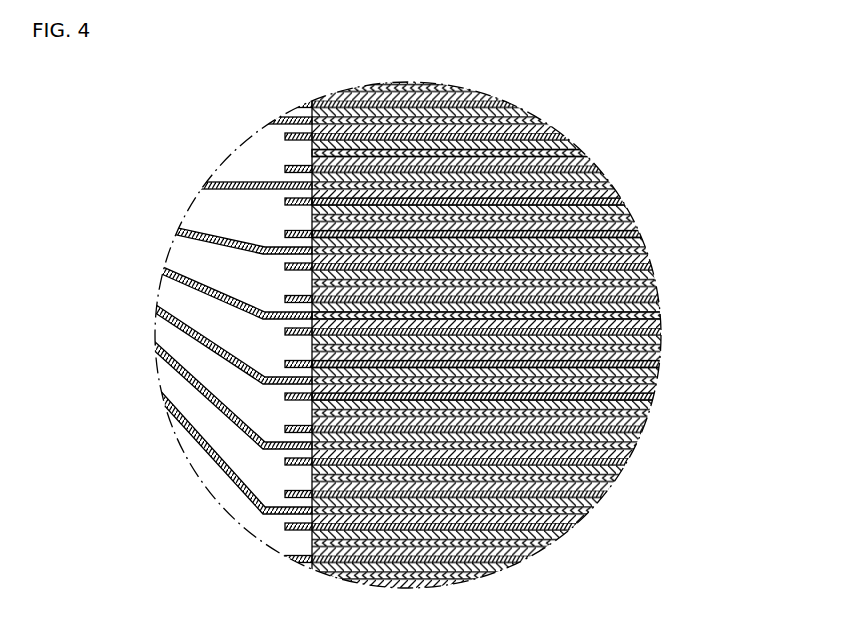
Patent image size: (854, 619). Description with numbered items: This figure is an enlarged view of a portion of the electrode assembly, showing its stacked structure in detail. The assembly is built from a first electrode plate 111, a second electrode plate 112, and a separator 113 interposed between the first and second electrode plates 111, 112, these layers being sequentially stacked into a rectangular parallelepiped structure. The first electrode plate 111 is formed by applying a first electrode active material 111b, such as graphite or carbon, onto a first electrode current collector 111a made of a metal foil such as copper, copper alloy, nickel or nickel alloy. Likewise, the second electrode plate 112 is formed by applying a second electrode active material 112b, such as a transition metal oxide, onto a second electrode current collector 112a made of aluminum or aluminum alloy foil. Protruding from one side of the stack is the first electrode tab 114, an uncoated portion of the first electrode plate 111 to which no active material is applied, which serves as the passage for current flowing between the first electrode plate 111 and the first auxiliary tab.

The first electrode plate 111 is at (782, 308).
The first electrode current collector 111a is at (636, 313).
The first electrode active material 111b is at (652, 370).
The second electrode plate 112 is at (752, 148).
The second electrode current collector 112a is at (586, 158).
The second electrode active material 112b is at (623, 208).
The separator 113 is at (603, 490).
The first electrode tab 114 is at (183, 370).